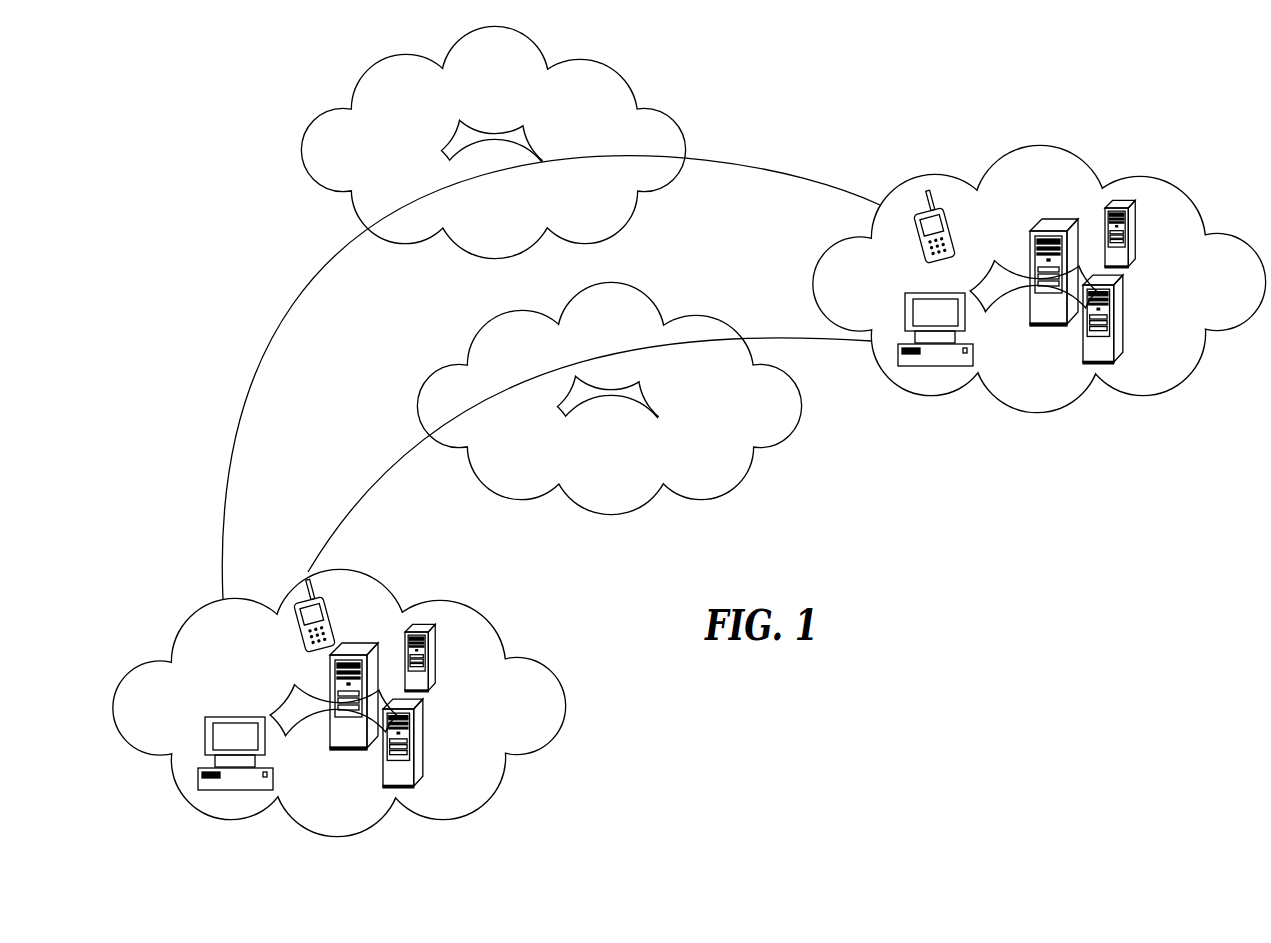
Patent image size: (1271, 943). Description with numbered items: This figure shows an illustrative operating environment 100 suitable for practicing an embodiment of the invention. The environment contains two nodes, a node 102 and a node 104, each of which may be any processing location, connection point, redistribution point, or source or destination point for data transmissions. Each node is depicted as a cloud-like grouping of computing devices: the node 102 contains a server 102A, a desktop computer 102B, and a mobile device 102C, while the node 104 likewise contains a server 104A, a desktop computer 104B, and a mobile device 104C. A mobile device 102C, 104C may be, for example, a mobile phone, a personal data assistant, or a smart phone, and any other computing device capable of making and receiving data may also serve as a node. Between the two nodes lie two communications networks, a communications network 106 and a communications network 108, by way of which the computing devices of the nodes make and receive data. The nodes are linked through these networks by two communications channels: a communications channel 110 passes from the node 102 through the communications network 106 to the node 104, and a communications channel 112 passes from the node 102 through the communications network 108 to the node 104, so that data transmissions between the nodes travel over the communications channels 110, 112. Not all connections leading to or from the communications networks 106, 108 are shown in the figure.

The operating environment 100 is at (872, 42).
The node 102 is at (178, 632).
The server 102A is at (403, 793).
The desktop computer 102B is at (237, 793).
The mobile device 102C is at (323, 583).
The node 104 is at (1162, 180).
The server 104A is at (1102, 375).
The desktop computer 104B is at (935, 368).
The mobile device 104C is at (943, 192).
The communications network 106 is at (307, 128).
The communications network 108 is at (432, 370).
The communications channel 110 is at (250, 389).
The communications channel 112 is at (387, 468).